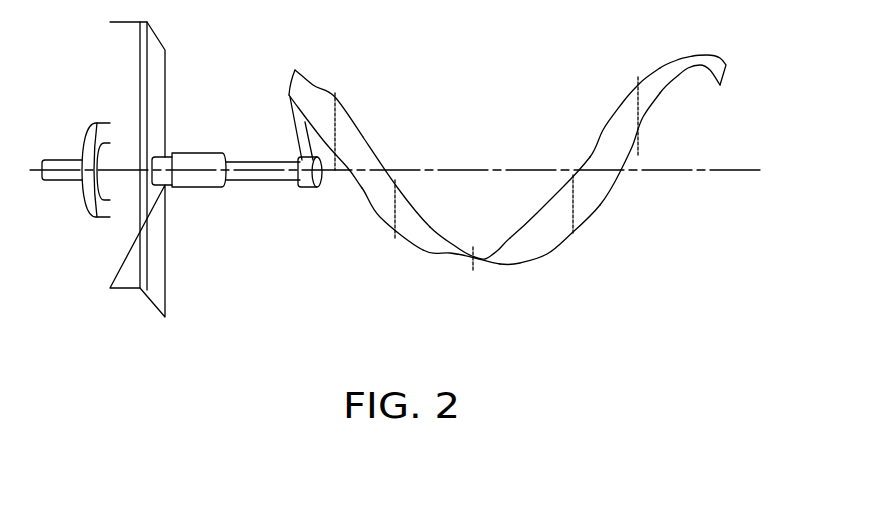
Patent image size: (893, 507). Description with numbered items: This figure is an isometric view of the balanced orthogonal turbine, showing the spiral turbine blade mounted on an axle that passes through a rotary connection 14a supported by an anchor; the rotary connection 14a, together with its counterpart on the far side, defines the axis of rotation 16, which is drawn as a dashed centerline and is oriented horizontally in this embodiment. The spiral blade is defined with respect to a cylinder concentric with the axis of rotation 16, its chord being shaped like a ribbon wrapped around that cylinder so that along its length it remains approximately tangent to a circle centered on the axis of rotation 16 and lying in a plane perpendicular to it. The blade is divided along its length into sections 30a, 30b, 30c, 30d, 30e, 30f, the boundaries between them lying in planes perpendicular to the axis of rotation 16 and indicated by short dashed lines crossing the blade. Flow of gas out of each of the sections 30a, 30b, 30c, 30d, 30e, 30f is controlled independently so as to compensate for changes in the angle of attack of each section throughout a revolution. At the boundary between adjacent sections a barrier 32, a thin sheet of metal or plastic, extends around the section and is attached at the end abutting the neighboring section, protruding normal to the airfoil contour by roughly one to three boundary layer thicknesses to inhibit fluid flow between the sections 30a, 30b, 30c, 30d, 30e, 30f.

The rotary connection 14a is at (148, 118).
The axis of rotation 16 is at (516, 167).
The section 30a is at (315, 95).
The section 30b is at (365, 183).
The section 30c is at (425, 240).
The section 30d is at (547, 240).
The section 30e is at (607, 180).
The section 30f is at (663, 77).
The barrier 32 is at (337, 132).